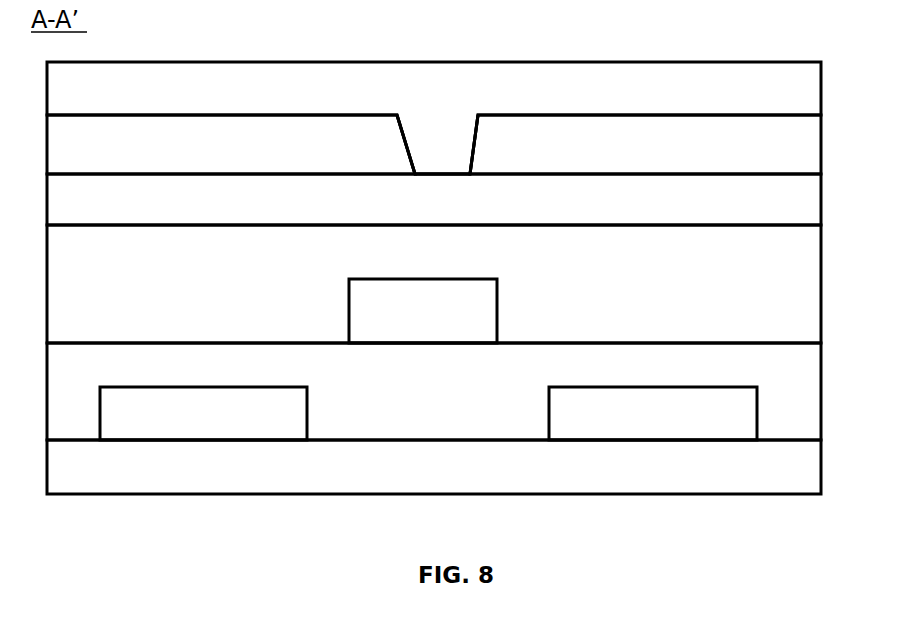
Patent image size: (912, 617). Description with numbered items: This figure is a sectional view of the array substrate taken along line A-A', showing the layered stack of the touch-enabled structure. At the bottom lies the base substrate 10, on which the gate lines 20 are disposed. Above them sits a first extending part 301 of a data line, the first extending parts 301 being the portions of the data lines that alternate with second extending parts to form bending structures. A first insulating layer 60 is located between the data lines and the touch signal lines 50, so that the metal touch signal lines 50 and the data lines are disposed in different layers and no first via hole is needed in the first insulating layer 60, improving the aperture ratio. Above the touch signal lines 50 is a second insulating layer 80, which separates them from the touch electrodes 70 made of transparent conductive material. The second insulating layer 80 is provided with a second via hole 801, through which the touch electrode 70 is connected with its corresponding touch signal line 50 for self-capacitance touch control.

The base substrate 10 is at (800, 470).
The gate lines 20 is at (239, 422).
The first extending parts 301 is at (417, 325).
The first insulating layer 60 is at (798, 271).
The touch signal lines 50 is at (798, 202).
The second insulating layer 80 is at (798, 147).
The second via holes 801 is at (472, 155).
The touch electrodes 70 is at (798, 82).